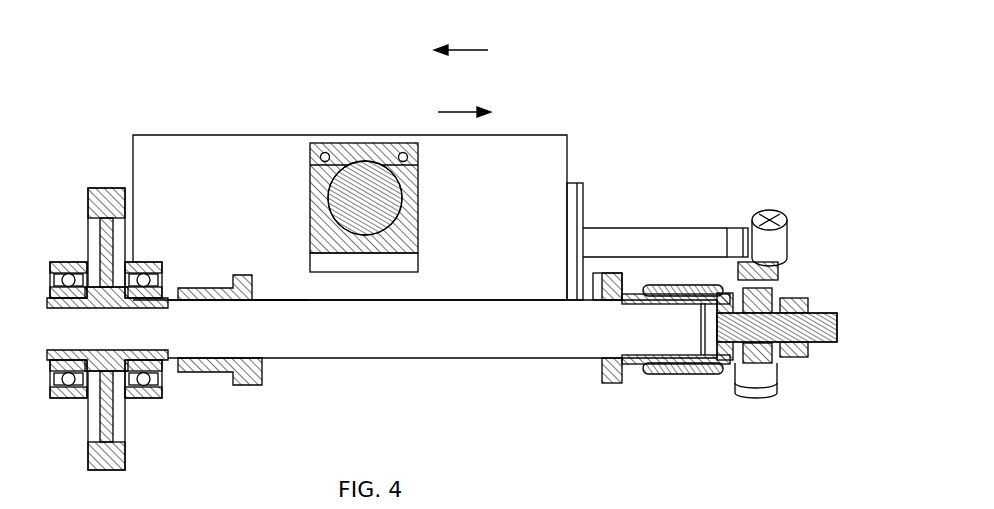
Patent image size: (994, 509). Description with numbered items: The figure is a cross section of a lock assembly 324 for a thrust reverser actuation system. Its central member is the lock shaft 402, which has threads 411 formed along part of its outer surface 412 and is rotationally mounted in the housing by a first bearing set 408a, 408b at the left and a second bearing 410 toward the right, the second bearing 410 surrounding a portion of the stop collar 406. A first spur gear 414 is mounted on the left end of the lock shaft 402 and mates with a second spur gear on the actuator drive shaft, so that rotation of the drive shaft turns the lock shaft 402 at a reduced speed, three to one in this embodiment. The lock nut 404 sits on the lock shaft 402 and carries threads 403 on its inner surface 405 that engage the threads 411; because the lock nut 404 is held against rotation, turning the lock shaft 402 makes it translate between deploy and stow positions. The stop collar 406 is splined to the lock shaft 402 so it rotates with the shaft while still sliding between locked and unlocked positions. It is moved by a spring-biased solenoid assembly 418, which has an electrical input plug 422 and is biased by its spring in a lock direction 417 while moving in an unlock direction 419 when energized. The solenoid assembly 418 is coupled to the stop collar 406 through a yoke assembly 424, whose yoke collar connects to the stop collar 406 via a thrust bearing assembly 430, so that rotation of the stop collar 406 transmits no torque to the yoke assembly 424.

The lock assembly 324 is at (680, 114).
The lock shaft 402 is at (480, 297).
The threads 403 is at (198, 302).
The lock nut 404 is at (217, 287).
The inner surface 405 is at (247, 340).
The stop collar 406 is at (838, 326).
The first bearing set 408a is at (62, 399).
The first bearing set 408b is at (150, 399).
The second bearing 410 is at (685, 374).
The threads 411 is at (288, 300).
The outer surface 412 is at (387, 360).
The first spur gear 414 is at (106, 188).
The lock direction 417 is at (450, 112).
The solenoid assembly 418 is at (233, 137).
The unlock direction 419 is at (472, 50).
The electrical input plug 422 is at (422, 177).
The yoke assembly 424 is at (803, 226).
The thrust bearing assembly 430 is at (752, 380).